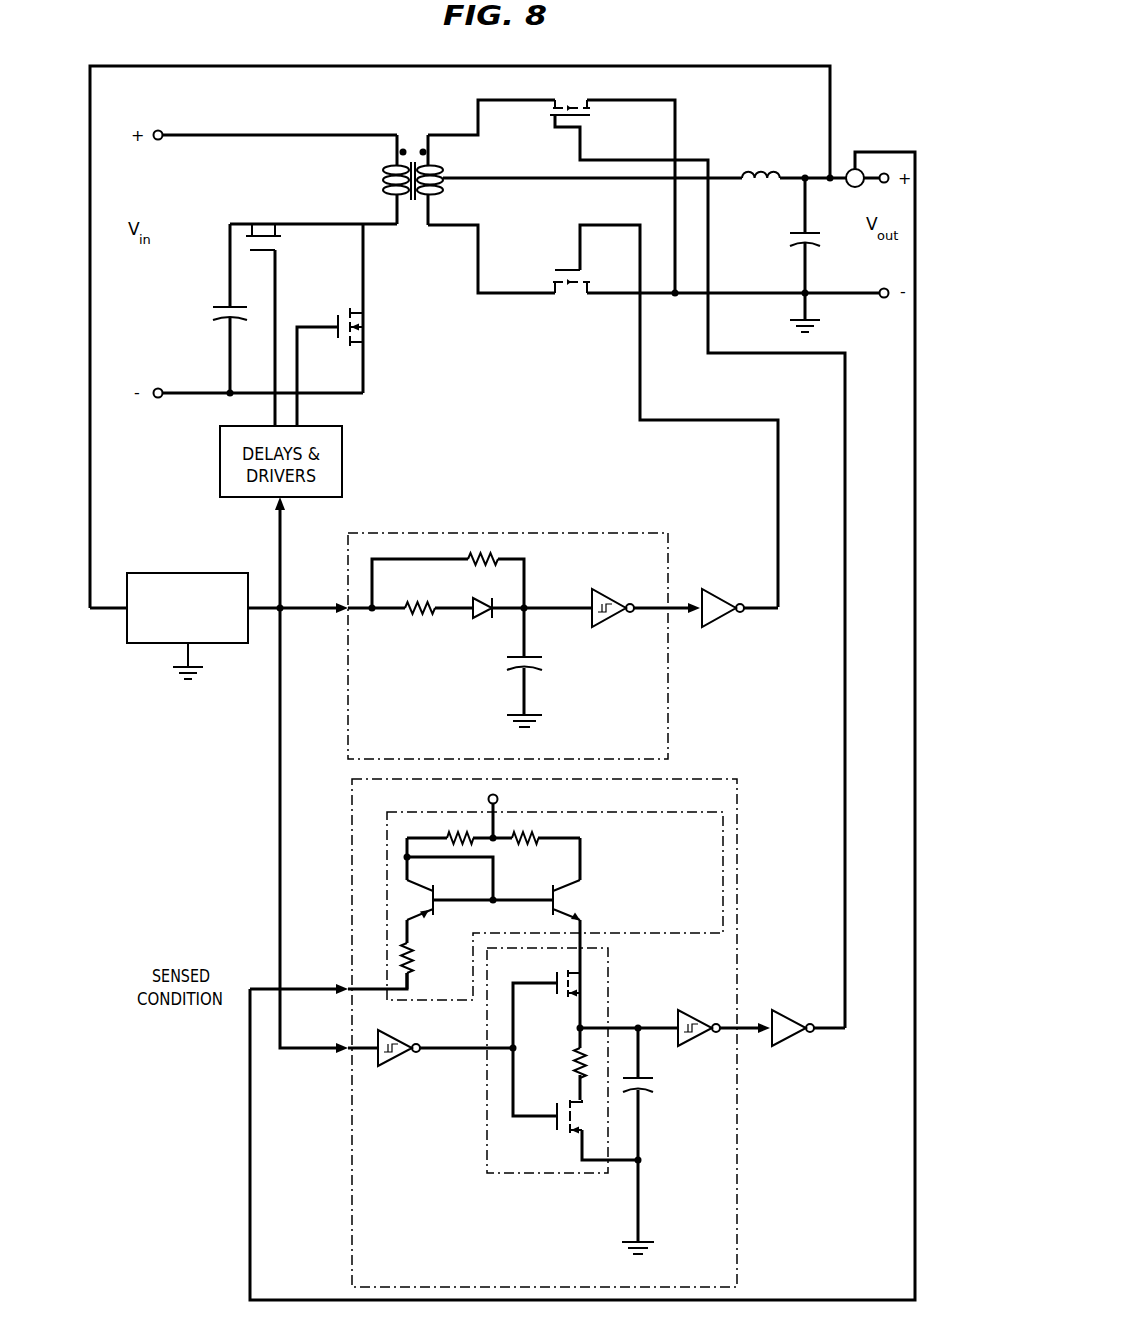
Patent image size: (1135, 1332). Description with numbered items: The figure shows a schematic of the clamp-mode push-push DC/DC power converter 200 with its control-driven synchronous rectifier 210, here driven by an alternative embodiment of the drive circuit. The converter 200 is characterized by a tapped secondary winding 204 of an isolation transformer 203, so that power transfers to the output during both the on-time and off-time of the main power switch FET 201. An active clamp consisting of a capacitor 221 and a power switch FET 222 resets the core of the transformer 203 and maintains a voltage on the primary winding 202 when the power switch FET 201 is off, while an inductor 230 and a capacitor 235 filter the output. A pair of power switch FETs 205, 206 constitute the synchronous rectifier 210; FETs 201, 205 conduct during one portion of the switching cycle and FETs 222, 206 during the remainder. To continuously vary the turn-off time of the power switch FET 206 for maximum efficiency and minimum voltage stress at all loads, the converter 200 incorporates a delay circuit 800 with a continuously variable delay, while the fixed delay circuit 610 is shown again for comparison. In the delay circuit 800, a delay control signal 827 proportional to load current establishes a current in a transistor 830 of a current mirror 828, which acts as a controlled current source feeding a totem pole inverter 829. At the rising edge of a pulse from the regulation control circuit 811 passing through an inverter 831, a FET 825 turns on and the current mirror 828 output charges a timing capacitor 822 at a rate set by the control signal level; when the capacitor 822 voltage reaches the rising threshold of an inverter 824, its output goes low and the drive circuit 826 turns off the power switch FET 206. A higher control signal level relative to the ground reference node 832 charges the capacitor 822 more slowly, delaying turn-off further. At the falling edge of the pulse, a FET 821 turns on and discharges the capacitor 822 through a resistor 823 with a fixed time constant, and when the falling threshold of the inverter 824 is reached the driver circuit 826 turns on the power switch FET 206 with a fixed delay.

The clamp-mode push-push DC/DC power converter 200 is at (309, 48).
The main power switch FET 201 is at (340, 325).
The primary winding 202 is at (384, 187).
The isolation transformer 203 is at (414, 150).
The tapped secondary winding 204 is at (445, 185).
The power switch FET 205 is at (572, 295).
The power switch FET 206 is at (555, 114).
The control-driven synchronous rectifier 210 is at (640, 140).
The capacitor 221 is at (214, 310).
The power switch FET 222 is at (262, 235).
The inductor 230 is at (758, 172).
The capacitor 235 is at (790, 238).
The delay circuit 610 is at (349, 743).
The delay circuit 800 is at (352, 1270).
The regulation control circuit 811 is at (190, 573).
The FET 821 is at (556, 1123).
The timing capacitor 822 is at (655, 1082).
The resistor 823 is at (577, 1063).
The inverter 824 is at (699, 1016).
The FET 825 is at (588, 980).
The drive circuit 826 is at (802, 1019).
The delay control signal 827 is at (335, 987).
The current mirror 828 is at (723, 877).
The totem pole inverter 829 is at (487, 1152).
The transistor 830 is at (576, 878).
The inverter 831 is at (407, 1068).
The ground reference node 832 is at (642, 1161).